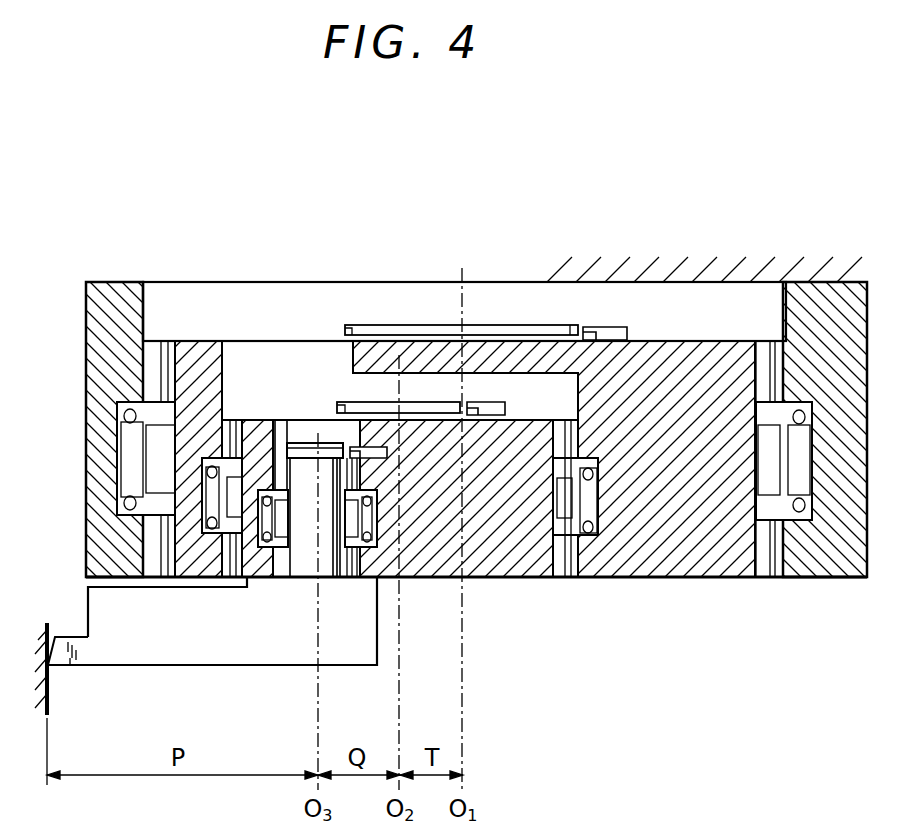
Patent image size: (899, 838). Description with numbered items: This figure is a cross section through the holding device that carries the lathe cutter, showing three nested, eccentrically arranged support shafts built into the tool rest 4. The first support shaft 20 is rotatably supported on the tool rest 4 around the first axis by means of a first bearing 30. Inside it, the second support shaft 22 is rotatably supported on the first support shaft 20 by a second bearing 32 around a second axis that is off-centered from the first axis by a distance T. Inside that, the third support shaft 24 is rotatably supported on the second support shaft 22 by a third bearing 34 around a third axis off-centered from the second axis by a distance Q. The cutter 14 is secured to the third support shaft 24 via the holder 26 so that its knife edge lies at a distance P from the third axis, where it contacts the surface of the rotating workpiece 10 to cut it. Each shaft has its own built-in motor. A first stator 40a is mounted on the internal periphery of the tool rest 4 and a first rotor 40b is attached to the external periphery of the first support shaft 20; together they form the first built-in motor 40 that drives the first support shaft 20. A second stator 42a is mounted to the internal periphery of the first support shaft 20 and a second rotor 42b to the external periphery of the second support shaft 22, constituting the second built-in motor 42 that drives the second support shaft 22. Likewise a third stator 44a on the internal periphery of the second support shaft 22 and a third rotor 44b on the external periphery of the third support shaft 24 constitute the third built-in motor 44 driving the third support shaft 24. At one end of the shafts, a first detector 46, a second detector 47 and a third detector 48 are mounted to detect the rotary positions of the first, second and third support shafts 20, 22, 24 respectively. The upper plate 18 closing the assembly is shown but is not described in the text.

The tool rest 4 is at (818, 560).
The workpiece 10 is at (57, 625).
The cutter 14 is at (62, 658).
The top plate 18 is at (665, 268).
The first support shaft 20 is at (675, 560).
The second support shaft 22 is at (512, 557).
The third support shaft 24 is at (298, 560).
The holder 26 is at (157, 647).
The first bearing 30 is at (760, 560).
The second bearing 32 is at (566, 563).
The third bearing 34 is at (352, 565).
The first built-in motor 40 is at (772, 417).
The first stator 40a is at (127, 442).
The first rotor 40b is at (160, 462).
The second built-in motor 42 is at (560, 470).
The second stator 42a is at (212, 470).
The second rotor 42b is at (240, 487).
The third built-in motor 44 is at (268, 560).
The third stator 44a is at (400, 553).
The third rotor 44b is at (377, 560).
The first detector 46 is at (588, 327).
The second detector 47 is at (466, 402).
The third detector 48 is at (357, 447).